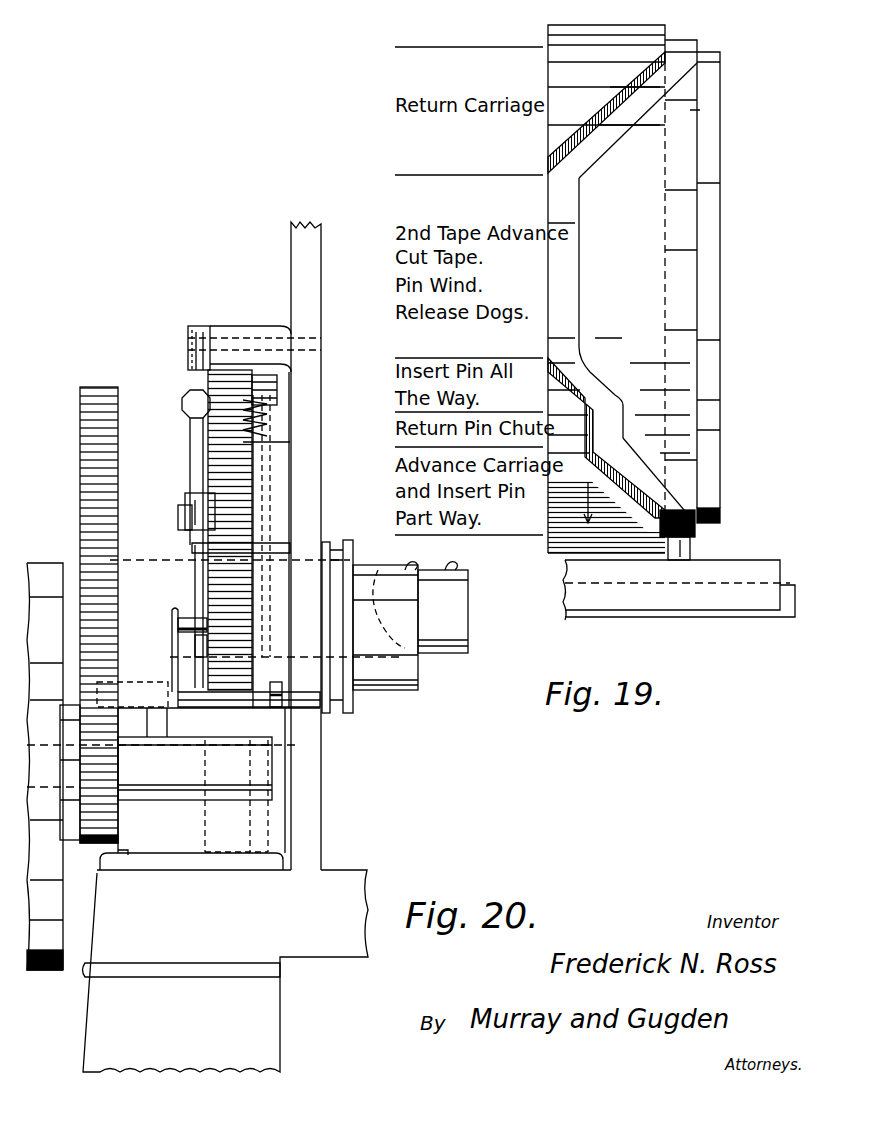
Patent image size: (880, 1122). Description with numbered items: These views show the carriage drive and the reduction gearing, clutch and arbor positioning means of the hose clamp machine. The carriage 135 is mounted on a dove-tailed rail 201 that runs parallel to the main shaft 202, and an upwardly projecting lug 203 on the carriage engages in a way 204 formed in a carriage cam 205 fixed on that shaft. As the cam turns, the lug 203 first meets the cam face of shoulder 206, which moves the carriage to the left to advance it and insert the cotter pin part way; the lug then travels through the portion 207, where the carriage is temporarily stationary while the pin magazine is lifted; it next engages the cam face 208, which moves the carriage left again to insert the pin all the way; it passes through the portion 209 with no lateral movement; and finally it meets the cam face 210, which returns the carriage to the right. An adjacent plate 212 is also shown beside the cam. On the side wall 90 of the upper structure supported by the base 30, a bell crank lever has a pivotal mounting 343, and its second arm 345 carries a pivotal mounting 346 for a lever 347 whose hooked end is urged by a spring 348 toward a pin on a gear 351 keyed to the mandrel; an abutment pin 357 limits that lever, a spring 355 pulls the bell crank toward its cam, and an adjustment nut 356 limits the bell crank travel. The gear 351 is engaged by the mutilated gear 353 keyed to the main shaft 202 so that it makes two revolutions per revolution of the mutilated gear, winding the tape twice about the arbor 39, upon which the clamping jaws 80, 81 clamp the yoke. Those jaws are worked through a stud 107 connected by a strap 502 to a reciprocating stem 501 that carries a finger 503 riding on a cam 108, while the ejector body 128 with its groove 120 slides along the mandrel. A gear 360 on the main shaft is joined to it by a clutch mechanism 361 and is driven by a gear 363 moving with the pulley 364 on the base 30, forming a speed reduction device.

In FIG. 19, the cam face 210 is at (618, 108).
In FIG. 19, the outer plate 212 is at (720, 127).
In FIG. 19, the portion of the way 209 is at (575, 270).
In FIG. 19, the carriage cam 205 is at (685, 295).
In FIG. 19, the cam face 208 is at (600, 382).
In FIG. 19, the portion of the way 207 is at (618, 415).
In FIG. 19, the way 204 is at (618, 443).
In FIG. 19, the cam face of shoulder 206 is at (672, 498).
In FIG. 19, the projecting lug 203 is at (695, 550).
In FIG. 19, the carriage 135 is at (565, 565).
In FIG. 19, the dove-tailed rail 201 is at (565, 585).
In FIG. 20, the side wall 90 is at (307, 272).
In FIG. 20, the pivotal mounting 343 is at (188, 345).
In FIG. 20, the second arm 345 is at (195, 357).
In FIG. 20, the adjustment nut 356 is at (184, 392).
In FIG. 20, the mutilated gear 353 is at (230, 368).
In FIG. 20, the gear 360 is at (93, 400).
In FIG. 20, the spring 348 is at (243, 442).
In FIG. 20, the pivotal mounting 346 is at (190, 490).
In FIG. 20, the abutment pin 357 is at (185, 510).
In FIG. 20, the lever 347 is at (182, 520).
In FIG. 20, the spring 355 is at (267, 453).
In FIG. 20, the groove or way 120 is at (333, 545).
In FIG. 20, the stud 107 is at (200, 590).
In FIG. 20, the strap 502 is at (176, 615).
In FIG. 20, the gear 351 is at (178, 638).
In FIG. 20, the clutch mechanism 361 is at (150, 676).
In FIG. 20, the clamping jaw 81 is at (410, 562).
In FIG. 20, the clamping jaw 80 is at (450, 562).
In FIG. 20, the arbor 39 is at (462, 653).
In FIG. 20, the main shaft 202 is at (405, 648).
In FIG. 20, the ejector body 128 is at (398, 690).
In FIG. 20, the finger 503 is at (285, 705).
In FIG. 20, the cam 108 is at (250, 705).
In FIG. 20, the reciprocating stem 501 is at (240, 715).
In FIG. 20, the gear 363 is at (92, 848).
In FIG. 20, the pulley 364 is at (42, 972).
In FIG. 20, the base 30 is at (260, 1032).